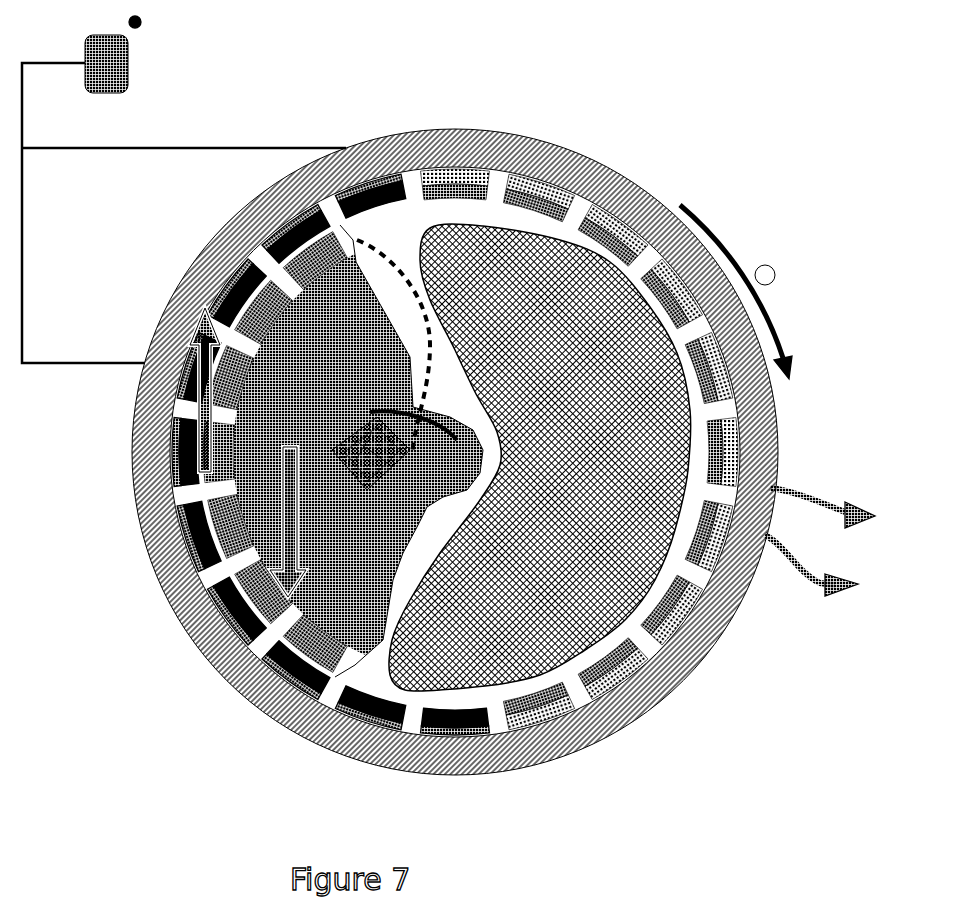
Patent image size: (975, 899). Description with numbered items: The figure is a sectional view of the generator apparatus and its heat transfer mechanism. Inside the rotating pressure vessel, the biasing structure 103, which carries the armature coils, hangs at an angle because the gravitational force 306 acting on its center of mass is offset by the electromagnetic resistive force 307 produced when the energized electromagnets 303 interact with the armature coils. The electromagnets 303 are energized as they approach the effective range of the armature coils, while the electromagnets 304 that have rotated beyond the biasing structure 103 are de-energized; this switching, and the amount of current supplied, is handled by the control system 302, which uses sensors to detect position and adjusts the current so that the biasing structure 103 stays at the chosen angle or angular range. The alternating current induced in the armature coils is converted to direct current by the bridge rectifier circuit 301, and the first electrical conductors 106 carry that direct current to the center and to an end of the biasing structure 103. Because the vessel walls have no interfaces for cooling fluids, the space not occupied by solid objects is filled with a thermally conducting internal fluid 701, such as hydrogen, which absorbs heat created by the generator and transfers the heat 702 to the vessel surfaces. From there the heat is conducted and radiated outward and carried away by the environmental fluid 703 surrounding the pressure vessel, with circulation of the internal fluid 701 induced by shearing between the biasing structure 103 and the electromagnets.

The bridge rectifier circuit 301 is at (235, 682).
The control system 302 is at (184, 189).
The energized electromagnets 303 is at (178, 447).
The de-energized electromagnets 304 is at (617, 685).
The gravitational force 306 is at (232, 527).
The electromagnetic resistive force 307 is at (178, 392).
The biasing structure 103 is at (418, 508).
The first electrical conductors 106 is at (416, 347).
The thermally conducting internal fluid 701 is at (567, 300).
The heat 702 is at (822, 533).
The environmental fluid 703 is at (771, 292).